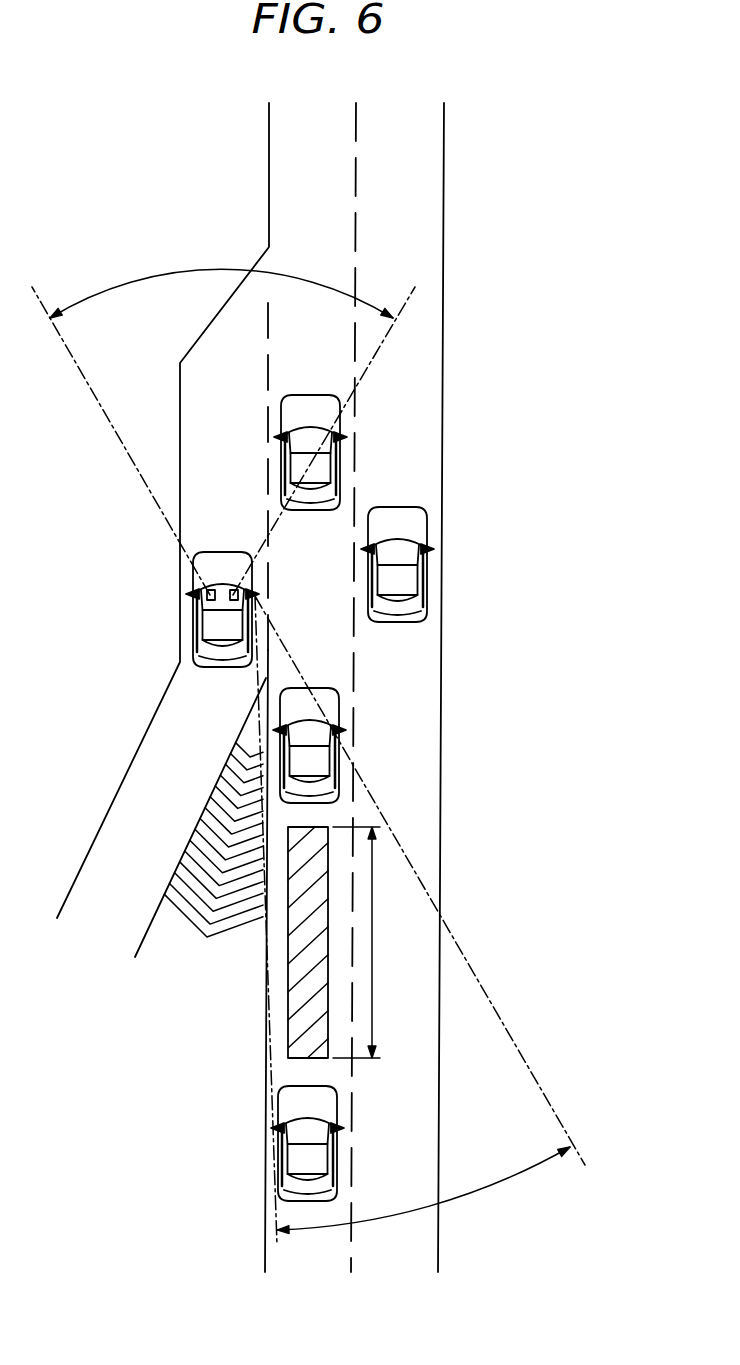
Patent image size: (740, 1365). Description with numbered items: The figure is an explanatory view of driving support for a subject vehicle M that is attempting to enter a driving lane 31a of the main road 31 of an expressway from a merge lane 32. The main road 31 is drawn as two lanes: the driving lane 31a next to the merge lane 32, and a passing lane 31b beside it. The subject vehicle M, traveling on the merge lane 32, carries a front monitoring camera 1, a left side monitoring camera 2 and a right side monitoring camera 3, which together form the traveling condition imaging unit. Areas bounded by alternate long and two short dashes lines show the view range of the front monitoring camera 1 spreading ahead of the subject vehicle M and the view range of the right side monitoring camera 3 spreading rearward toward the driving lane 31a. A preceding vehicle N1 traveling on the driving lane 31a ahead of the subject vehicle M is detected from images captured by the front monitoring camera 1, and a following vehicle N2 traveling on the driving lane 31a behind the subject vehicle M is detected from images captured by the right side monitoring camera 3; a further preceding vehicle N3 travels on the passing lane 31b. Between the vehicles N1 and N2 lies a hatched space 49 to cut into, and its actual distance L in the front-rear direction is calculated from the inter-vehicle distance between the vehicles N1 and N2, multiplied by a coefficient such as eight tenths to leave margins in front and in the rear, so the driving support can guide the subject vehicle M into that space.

The main road 31 is at (448, 96).
The driving lane 31a is at (280, 163).
The passing lane 31b is at (430, 219).
The merge lane 32 is at (153, 748).
The front monitoring camera 1 is at (234, 589).
The left side monitoring camera 2 is at (188, 594).
The right side monitoring camera 3 is at (258, 595).
The subject vehicle M is at (192, 630).
The preceding vehicle N1 is at (342, 462).
The following vehicle N2 is at (340, 713).
The preceding vehicle N3 is at (430, 573).
The space to cut into 49 is at (298, 995).
The actual distance L is at (362, 942).